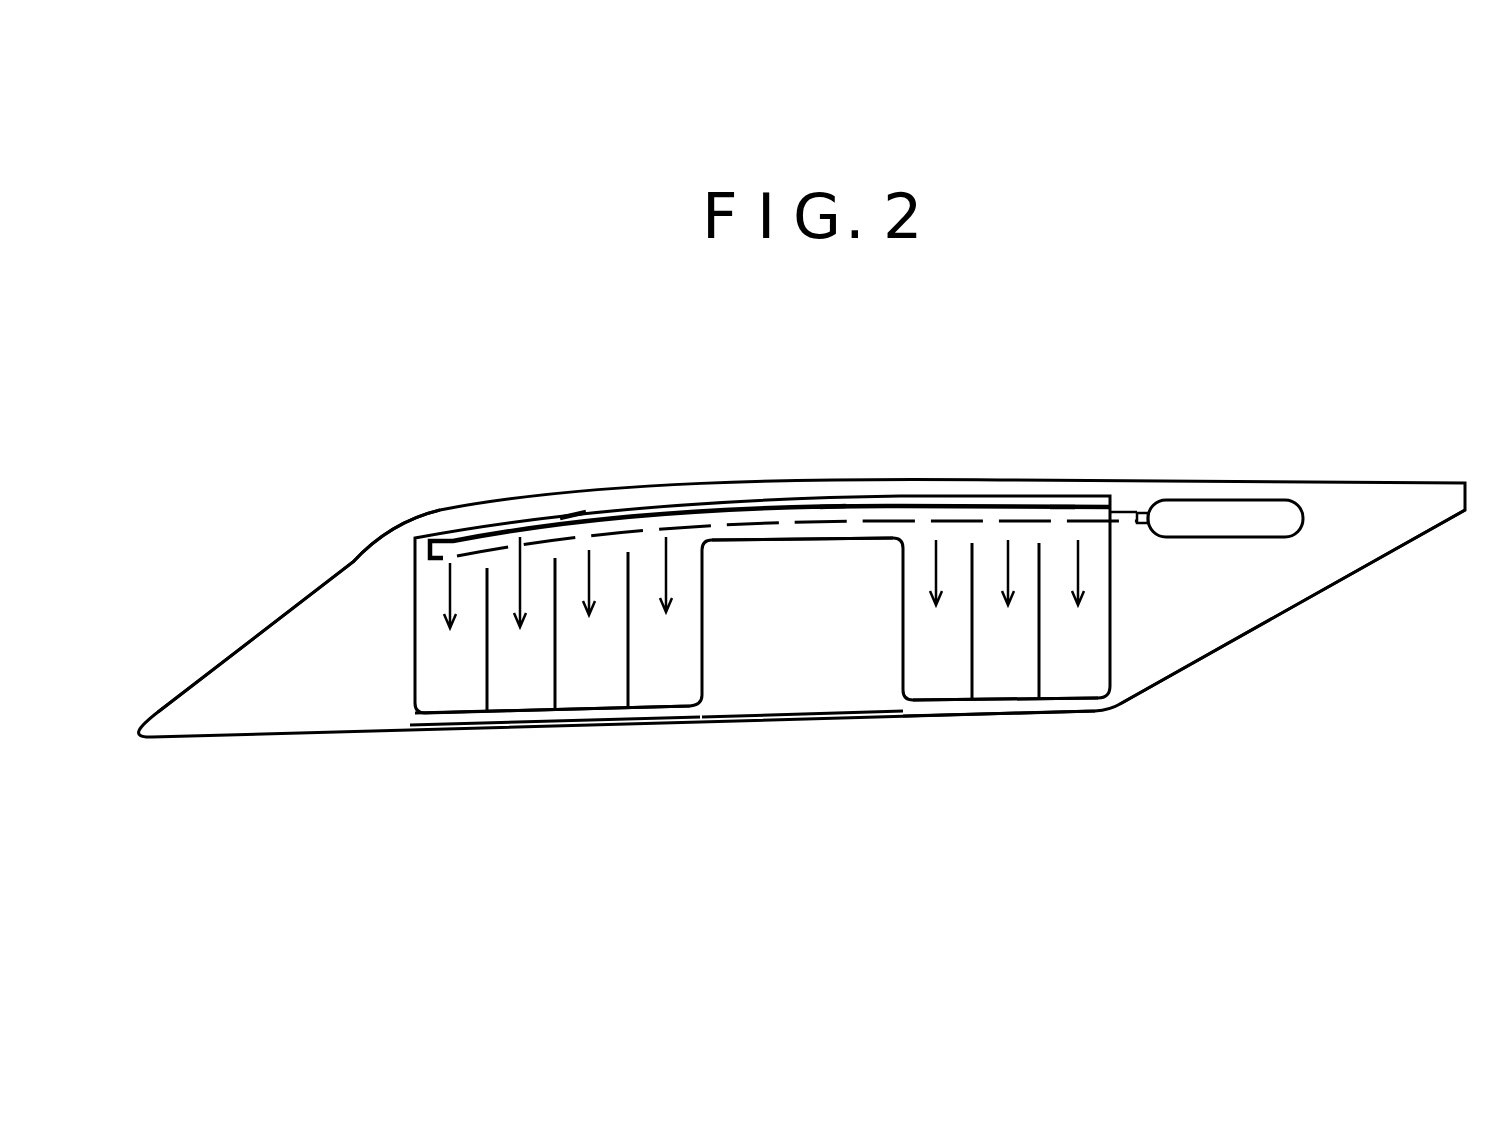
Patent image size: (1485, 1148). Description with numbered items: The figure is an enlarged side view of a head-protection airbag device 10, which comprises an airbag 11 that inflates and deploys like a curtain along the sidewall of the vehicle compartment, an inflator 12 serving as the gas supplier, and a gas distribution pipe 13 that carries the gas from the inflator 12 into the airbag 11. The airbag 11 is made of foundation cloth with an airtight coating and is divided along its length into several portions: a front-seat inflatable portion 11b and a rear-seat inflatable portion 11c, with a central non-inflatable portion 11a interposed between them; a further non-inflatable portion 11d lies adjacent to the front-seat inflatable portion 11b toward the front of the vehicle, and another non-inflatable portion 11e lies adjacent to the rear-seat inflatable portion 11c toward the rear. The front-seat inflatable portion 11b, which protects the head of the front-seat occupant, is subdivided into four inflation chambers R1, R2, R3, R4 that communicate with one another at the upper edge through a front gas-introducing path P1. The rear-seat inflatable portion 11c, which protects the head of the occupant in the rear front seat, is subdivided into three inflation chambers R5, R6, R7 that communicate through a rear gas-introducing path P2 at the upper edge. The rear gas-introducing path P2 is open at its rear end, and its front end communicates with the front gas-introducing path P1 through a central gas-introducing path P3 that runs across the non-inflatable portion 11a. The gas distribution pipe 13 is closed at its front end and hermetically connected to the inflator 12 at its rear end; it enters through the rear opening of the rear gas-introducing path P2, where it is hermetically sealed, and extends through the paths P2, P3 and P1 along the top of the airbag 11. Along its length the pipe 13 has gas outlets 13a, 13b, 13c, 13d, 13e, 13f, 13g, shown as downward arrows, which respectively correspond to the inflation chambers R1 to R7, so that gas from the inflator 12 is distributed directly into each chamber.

The head-protection airbag device 10 is at (802, 566).
The airbag 11 is at (877, 488).
The central non-inflatable portion 11a is at (808, 698).
The front-seat inflatable portion 11b is at (565, 717).
The rear-seat inflatable portion 11c is at (980, 697).
The non-inflatable portion 11d is at (300, 713).
The non-inflatable portion 11e is at (1228, 630).
The inflator 12 is at (1213, 518).
The gas distribution pipe 13 is at (782, 514).
The gas outlet 13a is at (452, 548).
The gas outlet 13b is at (519, 537).
The gas outlet 13c is at (593, 538).
The gas outlet 13d is at (667, 530).
The gas outlet 13e is at (938, 538).
The gas outlet 13f is at (1009, 537).
The gas outlet 13g is at (1080, 537).
The front gas-introducing path P1 is at (573, 518).
The rear gas-introducing path P2 is at (1062, 504).
The central gas-introducing path P3 is at (833, 505).
The inflation chamber R1 is at (458, 700).
The inflation chamber R2 is at (523, 700).
The inflation chamber R3 is at (607, 700).
The inflation chamber R4 is at (673, 700).
The inflation chamber R5 is at (937, 685).
The inflation chamber R6 is at (1012, 685).
The inflation chamber R7 is at (1075, 685).